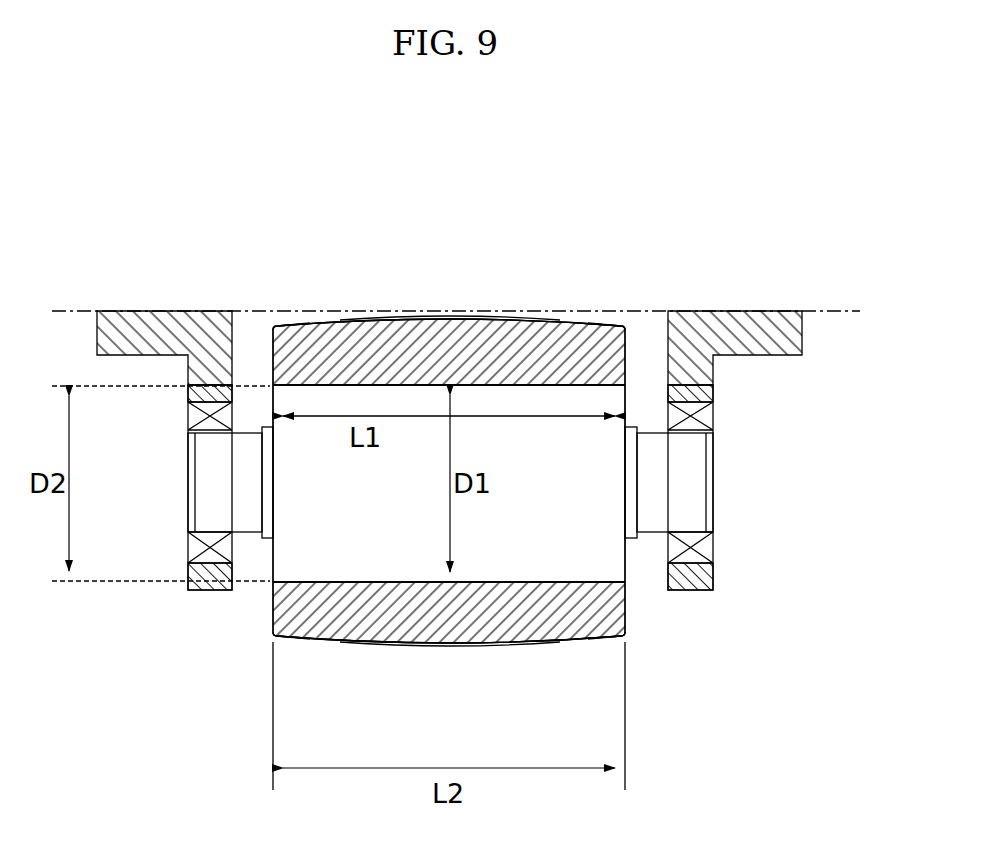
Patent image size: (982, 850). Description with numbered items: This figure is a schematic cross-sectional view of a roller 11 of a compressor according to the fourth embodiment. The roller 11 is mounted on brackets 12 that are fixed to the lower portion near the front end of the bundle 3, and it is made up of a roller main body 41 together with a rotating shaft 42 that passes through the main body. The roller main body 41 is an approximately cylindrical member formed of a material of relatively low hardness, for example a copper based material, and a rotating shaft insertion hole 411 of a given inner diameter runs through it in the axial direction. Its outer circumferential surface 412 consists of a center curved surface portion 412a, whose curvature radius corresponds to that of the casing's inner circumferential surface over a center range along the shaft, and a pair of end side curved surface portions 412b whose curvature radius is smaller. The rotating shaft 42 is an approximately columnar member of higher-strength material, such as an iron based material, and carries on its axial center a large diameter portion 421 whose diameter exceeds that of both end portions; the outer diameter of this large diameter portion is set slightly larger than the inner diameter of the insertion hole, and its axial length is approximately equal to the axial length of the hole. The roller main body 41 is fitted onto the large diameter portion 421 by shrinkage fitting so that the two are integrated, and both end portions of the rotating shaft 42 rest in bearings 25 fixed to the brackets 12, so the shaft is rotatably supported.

The bundle 3 is at (70, 311).
The roller 11 is at (322, 272).
The bracket 12 is at (140, 322).
The bearing 25 is at (195, 416).
The roller main body 41 is at (372, 355).
The rotating shaft insertion hole 411 is at (357, 582).
The outer circumferential surface 412 is at (450, 314).
The center curved surface portion 412a is at (500, 322).
The end side curved surface portion 412b is at (285, 322).
The rotating shaft 42 is at (722, 473).
The large diameter portion 421 is at (465, 583).